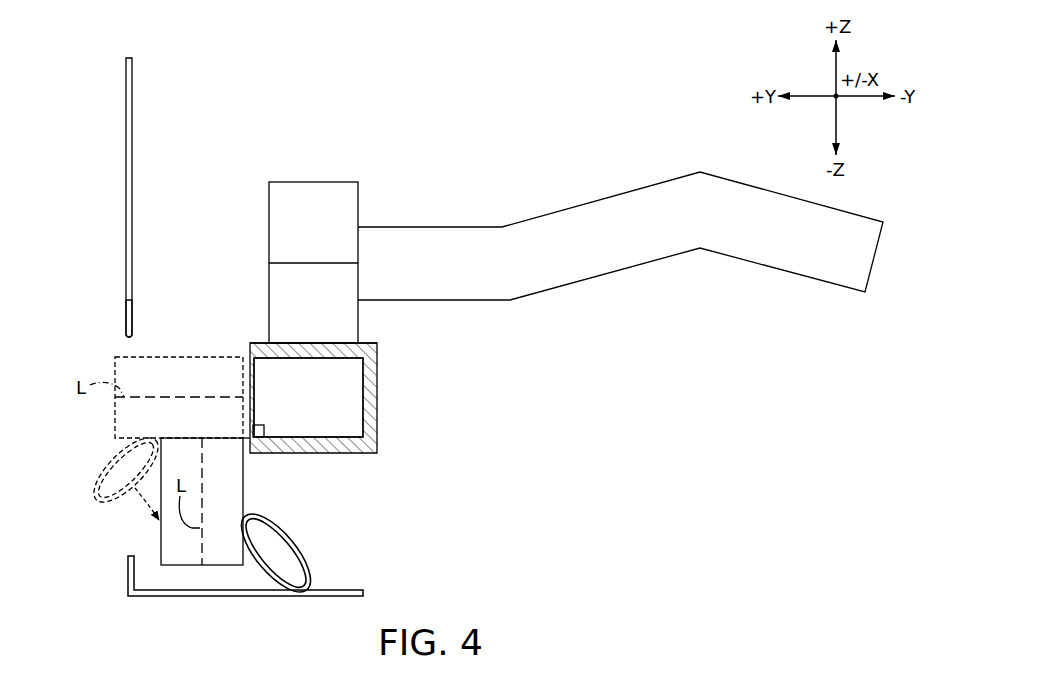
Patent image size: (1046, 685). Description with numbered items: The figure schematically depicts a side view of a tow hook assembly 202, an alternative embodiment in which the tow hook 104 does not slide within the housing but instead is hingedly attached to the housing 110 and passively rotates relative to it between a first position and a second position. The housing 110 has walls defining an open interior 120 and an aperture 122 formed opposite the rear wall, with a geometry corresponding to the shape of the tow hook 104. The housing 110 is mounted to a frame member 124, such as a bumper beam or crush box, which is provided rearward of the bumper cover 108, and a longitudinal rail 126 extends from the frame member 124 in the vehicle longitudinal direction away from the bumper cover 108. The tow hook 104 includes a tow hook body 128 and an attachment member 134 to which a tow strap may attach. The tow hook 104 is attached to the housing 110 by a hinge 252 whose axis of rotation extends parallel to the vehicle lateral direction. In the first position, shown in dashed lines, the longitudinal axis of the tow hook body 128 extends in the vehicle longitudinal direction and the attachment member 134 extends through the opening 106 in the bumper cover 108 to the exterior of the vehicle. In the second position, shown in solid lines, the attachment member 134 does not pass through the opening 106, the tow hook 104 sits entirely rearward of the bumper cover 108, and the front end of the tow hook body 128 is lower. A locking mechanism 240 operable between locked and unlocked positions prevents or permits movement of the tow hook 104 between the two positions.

The tow hook 104 is at (110, 356).
The opening 106 is at (139, 342).
The bumper cover 108 is at (124, 158).
The housing 110 is at (390, 361).
The open interior 120 is at (350, 404).
The aperture 122 is at (250, 368).
The frame member 124 is at (312, 182).
The longitudinal rail 126 is at (577, 204).
The tow hook body 128 is at (188, 565).
The attachment member 134 is at (308, 574).
The tow hook assembly 202 is at (420, 456).
The locking mechanism 240 is at (267, 422).
The hinge 252 is at (244, 436).